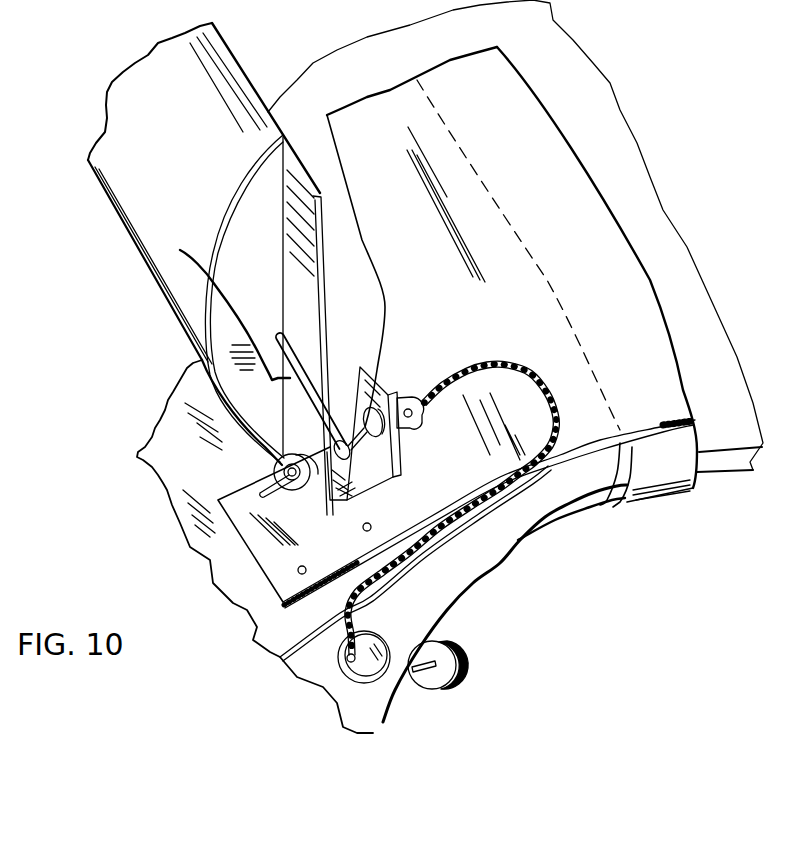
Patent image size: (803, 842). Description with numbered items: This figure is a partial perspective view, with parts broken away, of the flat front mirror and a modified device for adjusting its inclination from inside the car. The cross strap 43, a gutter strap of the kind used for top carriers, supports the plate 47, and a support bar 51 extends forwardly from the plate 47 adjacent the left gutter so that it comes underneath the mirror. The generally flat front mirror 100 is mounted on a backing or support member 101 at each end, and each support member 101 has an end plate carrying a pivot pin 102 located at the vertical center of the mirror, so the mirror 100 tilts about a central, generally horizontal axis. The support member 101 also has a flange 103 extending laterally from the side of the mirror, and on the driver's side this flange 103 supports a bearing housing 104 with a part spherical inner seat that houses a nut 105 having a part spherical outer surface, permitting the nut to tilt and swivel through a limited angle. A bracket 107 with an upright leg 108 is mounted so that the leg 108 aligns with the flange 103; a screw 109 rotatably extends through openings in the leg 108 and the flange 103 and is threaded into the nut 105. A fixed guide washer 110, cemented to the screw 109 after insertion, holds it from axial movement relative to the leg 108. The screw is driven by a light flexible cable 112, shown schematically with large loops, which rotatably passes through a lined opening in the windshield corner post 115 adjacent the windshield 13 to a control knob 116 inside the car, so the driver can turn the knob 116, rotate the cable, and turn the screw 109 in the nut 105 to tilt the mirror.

The windshield 13 is at (155, 445).
The cross strap 43 is at (650, 483).
The plate 47 is at (393, 110).
The support bar 51 is at (247, 517).
The front mirror 100 is at (220, 55).
The support member 101 is at (260, 223).
The pivot pin 102 is at (219, 351).
The flange 103 is at (307, 248).
The bearing housing 104 is at (322, 492).
The nut 105 is at (277, 467).
The bracket 107 is at (392, 458).
The leg 108 is at (378, 383).
The screw 109 is at (343, 438).
The guide washer 110 is at (372, 427).
The flexible cable 112 is at (513, 362).
The support post 115 is at (380, 690).
The control knob 116 is at (463, 658).